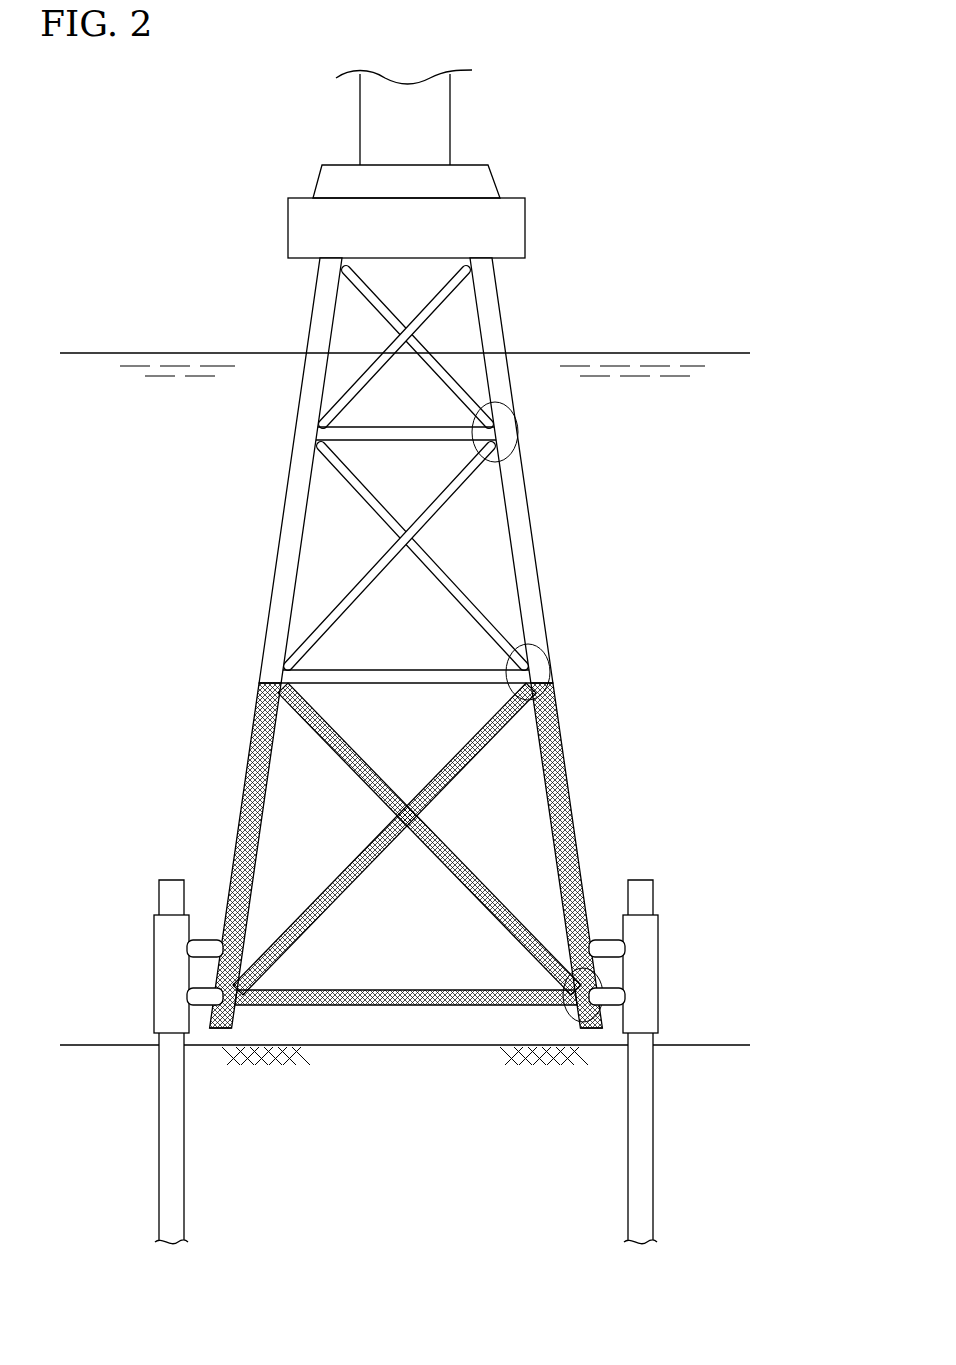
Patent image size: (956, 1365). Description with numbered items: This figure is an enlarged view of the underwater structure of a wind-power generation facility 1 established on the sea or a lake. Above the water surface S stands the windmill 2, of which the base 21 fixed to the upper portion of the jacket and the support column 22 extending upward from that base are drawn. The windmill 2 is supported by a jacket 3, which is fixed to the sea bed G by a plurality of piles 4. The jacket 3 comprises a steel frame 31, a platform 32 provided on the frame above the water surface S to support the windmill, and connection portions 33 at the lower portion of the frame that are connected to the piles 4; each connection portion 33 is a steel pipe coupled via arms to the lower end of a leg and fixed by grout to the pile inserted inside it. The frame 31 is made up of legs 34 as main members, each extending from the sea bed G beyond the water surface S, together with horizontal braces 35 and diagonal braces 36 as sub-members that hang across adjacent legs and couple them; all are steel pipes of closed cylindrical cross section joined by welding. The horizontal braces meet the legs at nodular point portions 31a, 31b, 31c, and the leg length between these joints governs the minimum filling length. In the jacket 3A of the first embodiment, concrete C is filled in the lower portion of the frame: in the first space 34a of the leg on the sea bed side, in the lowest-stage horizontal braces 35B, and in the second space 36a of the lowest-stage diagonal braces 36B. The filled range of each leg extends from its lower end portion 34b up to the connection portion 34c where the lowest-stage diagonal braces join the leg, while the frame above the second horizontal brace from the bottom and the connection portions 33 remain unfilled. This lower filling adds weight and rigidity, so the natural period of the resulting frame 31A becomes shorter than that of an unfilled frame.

The wind-power generation facility 1 is at (557, 120).
The windmill 2 is at (278, 70).
The base 21 is at (310, 183).
The support column 22 is at (362, 123).
The jacket 3 is at (401, 656).
The jacket of the first embodiment 3A is at (212, 542).
The frame 31 is at (398, 686).
The frame filled with concrete 31A is at (240, 478).
The nodular point portion 31a is at (600, 988).
The nodular point portion 31b is at (543, 668).
The nodular point portion 31c is at (518, 432).
The platform 32 is at (288, 228).
The connection portion 33 is at (170, 938).
The leg 34 is at (272, 588).
The first space 34a is at (268, 632).
The lower end portion 34b is at (216, 1030).
The connection portion of the leg 34c is at (256, 702).
The horizontal brace 35 is at (405, 441).
The lowest-stage horizontal brace 35B is at (405, 990).
The diagonal brace 36 is at (362, 292).
The second space 36a is at (318, 626).
The lowest-stage diagonal brace 36B is at (302, 925).
The pile 4 is at (165, 1138).
The concrete C is at (262, 806).
The water surface S is at (706, 352).
The sea bed G is at (735, 1045).